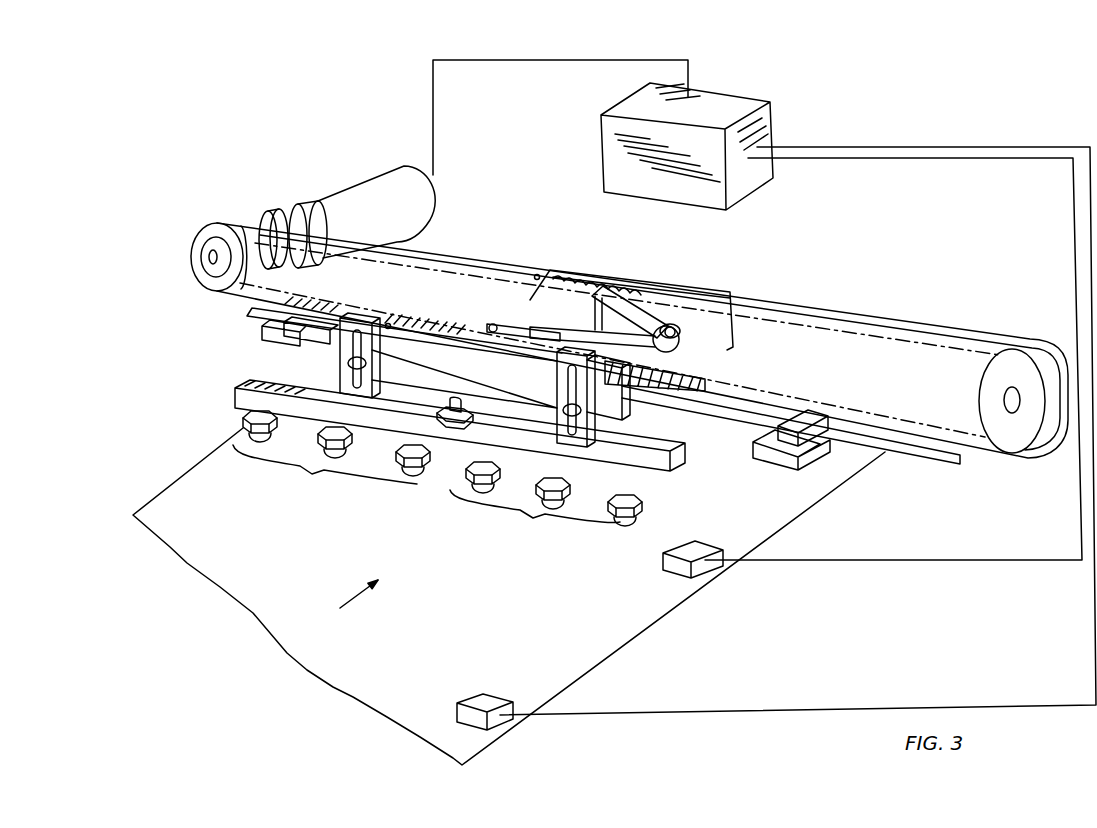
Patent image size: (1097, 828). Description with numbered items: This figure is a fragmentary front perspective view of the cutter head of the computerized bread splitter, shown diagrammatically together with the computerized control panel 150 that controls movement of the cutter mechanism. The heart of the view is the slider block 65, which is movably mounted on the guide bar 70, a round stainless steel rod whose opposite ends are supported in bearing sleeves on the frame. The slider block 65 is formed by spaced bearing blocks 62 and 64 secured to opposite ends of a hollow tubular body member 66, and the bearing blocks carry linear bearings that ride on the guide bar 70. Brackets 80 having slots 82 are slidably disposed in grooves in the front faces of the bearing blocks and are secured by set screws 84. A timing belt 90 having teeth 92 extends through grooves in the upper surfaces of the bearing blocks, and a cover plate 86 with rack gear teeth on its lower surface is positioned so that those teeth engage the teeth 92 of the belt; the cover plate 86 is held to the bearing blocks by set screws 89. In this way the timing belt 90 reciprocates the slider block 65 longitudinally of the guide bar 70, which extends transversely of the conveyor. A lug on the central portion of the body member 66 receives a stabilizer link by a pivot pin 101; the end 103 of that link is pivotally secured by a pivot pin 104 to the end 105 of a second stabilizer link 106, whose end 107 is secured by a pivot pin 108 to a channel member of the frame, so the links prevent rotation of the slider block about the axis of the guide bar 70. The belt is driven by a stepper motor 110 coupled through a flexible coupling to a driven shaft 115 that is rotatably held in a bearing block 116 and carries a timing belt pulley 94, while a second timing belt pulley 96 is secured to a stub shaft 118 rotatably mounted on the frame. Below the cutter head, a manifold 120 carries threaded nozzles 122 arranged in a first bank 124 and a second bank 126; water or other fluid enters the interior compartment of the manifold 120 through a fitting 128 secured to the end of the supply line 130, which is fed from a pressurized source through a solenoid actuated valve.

The bearing block 62 is at (332, 350).
The bearing block 64 is at (615, 408).
The slider block 65 is at (454, 321).
The hollow tubular body member 66 is at (404, 358).
The guide bar 70 is at (940, 458).
The bracket 80 is at (357, 310).
The slot 82 is at (348, 366).
The set screw 84 is at (584, 418).
The cover plate 86 is at (380, 319).
The set screw 89 is at (390, 322).
The timing belt 90 is at (877, 316).
The teeth 92 is at (537, 275).
The timing belt pulley 94 is at (211, 240).
The second timing belt pulley 96 is at (999, 438).
The pivot pin 101 is at (494, 324).
The end of stabilizer link 103 is at (683, 363).
The pivot pin 104 is at (680, 327).
The end of second stabilizer link 105 is at (733, 331).
The second stabilizer link 106 is at (638, 315).
The end of stabilizer link 107 is at (599, 300).
The pivot pin 108 is at (626, 288).
The stepper motor 110 is at (367, 190).
The driven shaft 115 is at (208, 258).
The bearing block 116 is at (272, 211).
The stub shaft 118 is at (1005, 393).
The manifold 120 is at (240, 392).
The nozzle 122 is at (243, 420).
The first bank of nozzles 124 is at (325, 471).
The second bank of nozzles 126 is at (535, 519).
The fitting 128 is at (474, 418).
The supply line 130 is at (447, 403).
The computerized control panel 150 is at (730, 88).